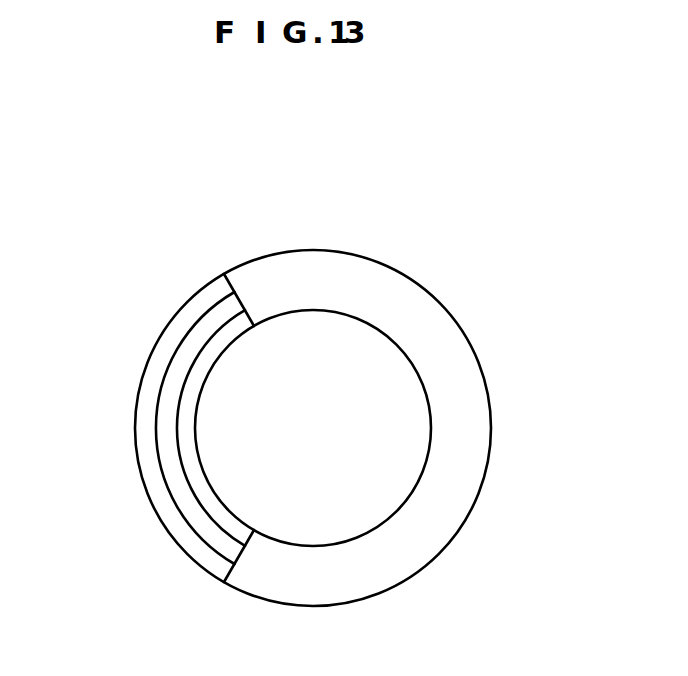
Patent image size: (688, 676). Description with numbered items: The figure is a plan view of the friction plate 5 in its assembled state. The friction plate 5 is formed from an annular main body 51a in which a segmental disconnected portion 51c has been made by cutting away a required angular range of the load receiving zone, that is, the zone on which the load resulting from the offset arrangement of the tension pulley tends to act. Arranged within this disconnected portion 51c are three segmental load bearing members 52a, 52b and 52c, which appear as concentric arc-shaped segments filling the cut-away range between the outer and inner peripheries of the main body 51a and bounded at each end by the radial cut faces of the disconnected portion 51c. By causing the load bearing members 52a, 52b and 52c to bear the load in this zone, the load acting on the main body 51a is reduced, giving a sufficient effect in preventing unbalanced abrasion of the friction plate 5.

The friction plate 5 is at (268, 146).
The main body 51a is at (297, 263).
The segmental disconnected portion 51c is at (247, 537).
The segmental load bearing member 52a is at (170, 332).
The segmental load bearing member 52b is at (203, 328).
The segmental load bearing member 52c is at (232, 328).